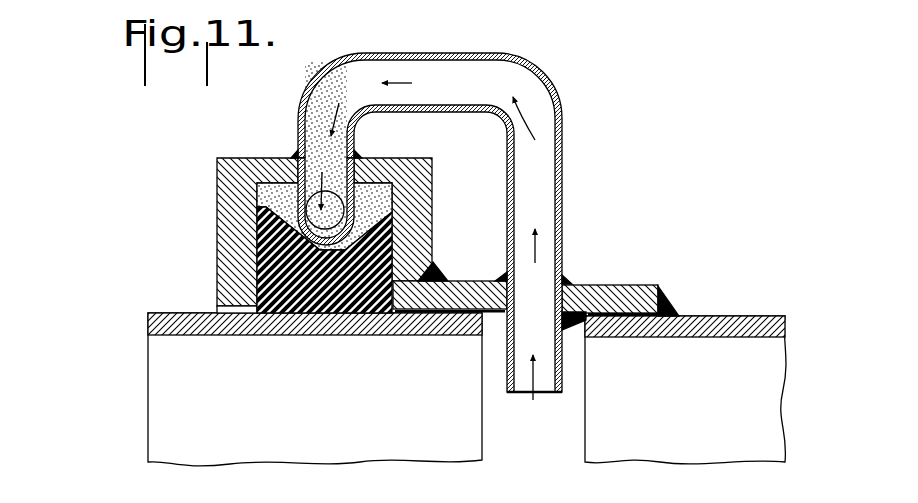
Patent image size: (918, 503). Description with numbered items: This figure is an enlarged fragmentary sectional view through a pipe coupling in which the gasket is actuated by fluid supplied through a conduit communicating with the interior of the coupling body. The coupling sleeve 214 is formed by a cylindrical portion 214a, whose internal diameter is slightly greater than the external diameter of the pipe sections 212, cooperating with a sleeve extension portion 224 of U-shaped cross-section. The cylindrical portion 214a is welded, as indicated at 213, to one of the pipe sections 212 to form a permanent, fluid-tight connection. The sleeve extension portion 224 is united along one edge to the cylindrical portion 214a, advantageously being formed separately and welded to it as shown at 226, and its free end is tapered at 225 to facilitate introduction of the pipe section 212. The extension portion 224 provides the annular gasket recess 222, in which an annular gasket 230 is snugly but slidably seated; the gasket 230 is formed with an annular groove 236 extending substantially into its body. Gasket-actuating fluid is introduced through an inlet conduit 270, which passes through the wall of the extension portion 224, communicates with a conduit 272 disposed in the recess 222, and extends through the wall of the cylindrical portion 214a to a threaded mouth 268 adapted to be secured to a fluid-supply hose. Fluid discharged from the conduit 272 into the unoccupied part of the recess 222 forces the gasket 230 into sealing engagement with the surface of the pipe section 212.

The pipe section 212 is at (190, 313).
The weld 213 is at (672, 300).
The coupling sleeve 214 is at (480, 276).
The cylindrical portion 214a is at (600, 285).
The gasket recess 222 is at (291, 157).
The sleeve extension portion 224 is at (217, 218).
The tapered free end 225 is at (215, 306).
The weld 226 is at (430, 278).
The annular gasket 230 is at (392, 222).
The annular groove 236 is at (354, 222).
The threaded mouth 268 is at (557, 394).
The inlet conduit 270 is at (450, 53).
The conduit 272 is at (262, 195).